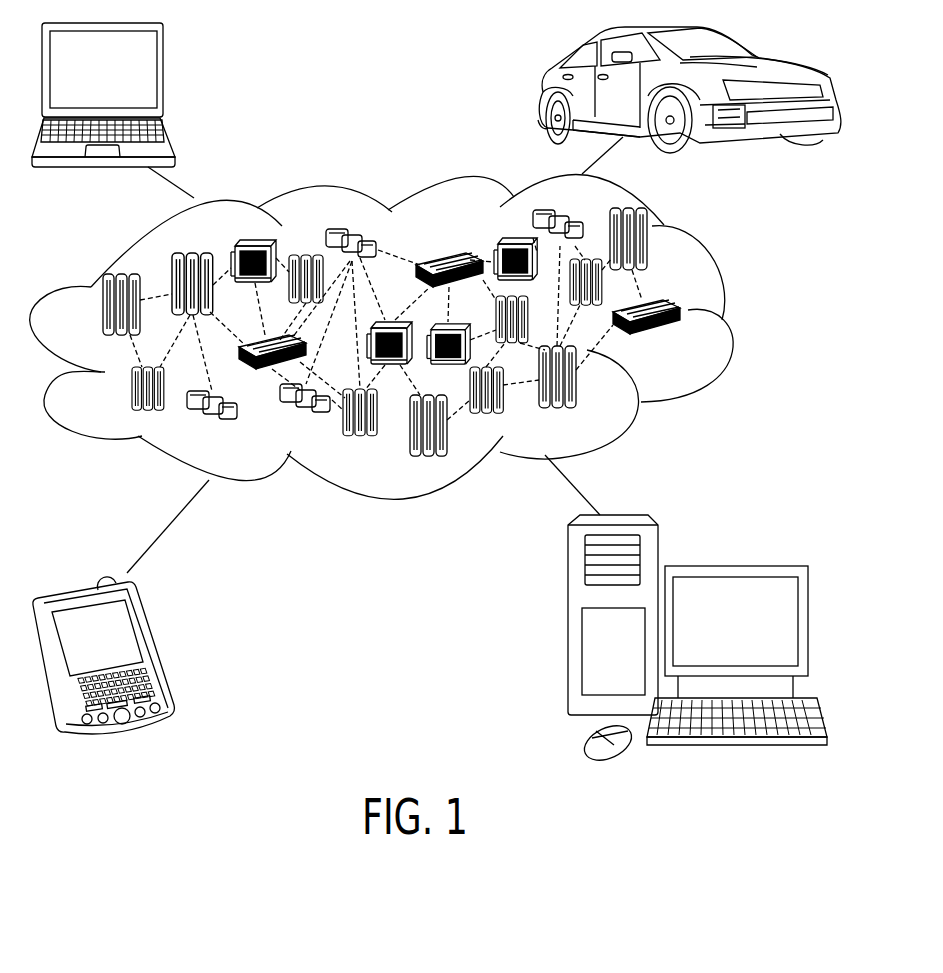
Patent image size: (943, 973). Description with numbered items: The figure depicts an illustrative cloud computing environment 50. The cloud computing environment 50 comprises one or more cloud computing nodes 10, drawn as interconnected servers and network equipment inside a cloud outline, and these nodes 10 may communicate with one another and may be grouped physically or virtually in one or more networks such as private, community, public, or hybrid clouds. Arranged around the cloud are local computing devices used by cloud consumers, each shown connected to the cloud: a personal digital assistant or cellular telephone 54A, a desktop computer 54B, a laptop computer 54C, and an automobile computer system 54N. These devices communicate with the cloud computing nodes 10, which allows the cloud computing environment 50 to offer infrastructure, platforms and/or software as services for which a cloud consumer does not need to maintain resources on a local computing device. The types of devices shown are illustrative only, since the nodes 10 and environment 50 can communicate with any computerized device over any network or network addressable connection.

The cloud computing nodes 10 is at (695, 342).
The cloud computing environment 50 is at (733, 312).
The personal digital assistant or cellular telephone 54A is at (153, 647).
The desktop computer 54B is at (733, 565).
The laptop computer 54C is at (163, 72).
The automobile computer system 54N is at (543, 85).